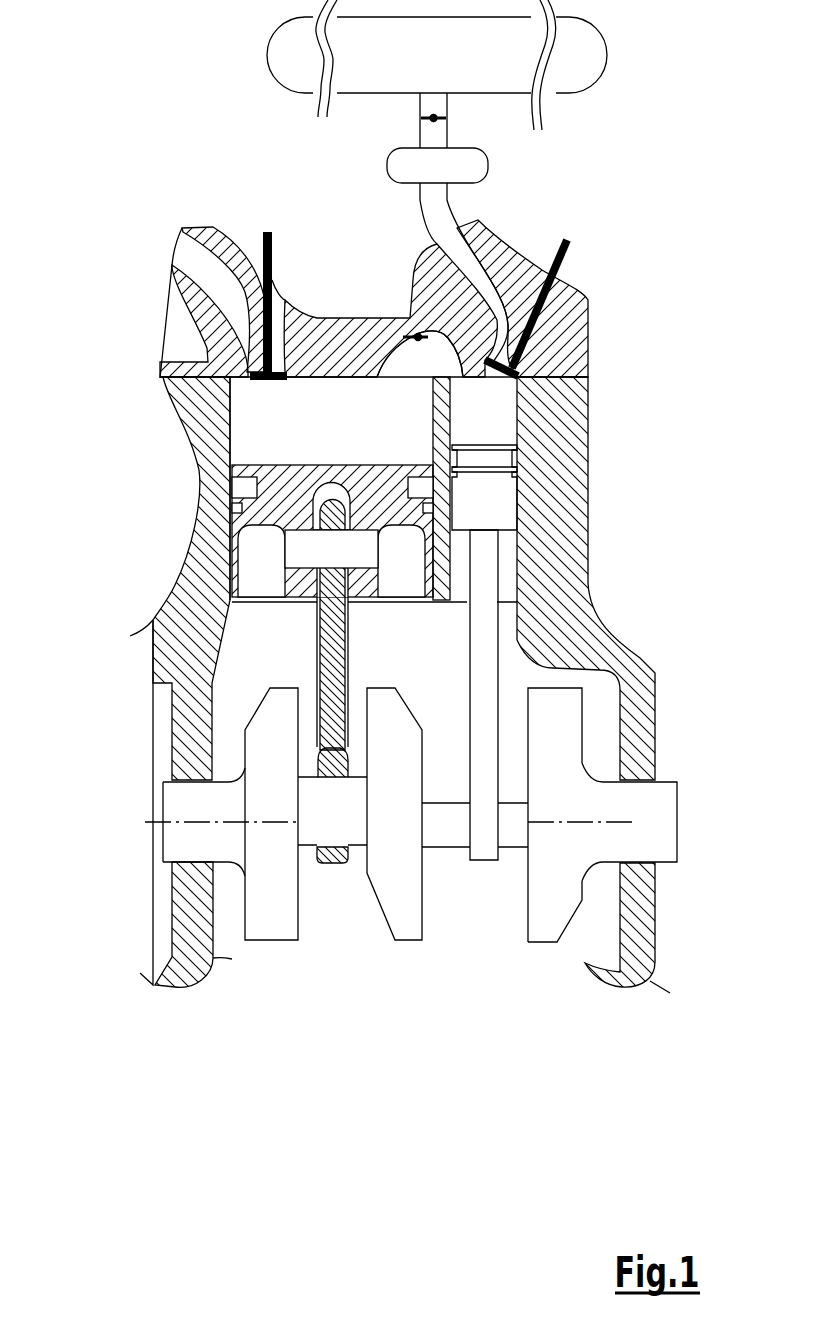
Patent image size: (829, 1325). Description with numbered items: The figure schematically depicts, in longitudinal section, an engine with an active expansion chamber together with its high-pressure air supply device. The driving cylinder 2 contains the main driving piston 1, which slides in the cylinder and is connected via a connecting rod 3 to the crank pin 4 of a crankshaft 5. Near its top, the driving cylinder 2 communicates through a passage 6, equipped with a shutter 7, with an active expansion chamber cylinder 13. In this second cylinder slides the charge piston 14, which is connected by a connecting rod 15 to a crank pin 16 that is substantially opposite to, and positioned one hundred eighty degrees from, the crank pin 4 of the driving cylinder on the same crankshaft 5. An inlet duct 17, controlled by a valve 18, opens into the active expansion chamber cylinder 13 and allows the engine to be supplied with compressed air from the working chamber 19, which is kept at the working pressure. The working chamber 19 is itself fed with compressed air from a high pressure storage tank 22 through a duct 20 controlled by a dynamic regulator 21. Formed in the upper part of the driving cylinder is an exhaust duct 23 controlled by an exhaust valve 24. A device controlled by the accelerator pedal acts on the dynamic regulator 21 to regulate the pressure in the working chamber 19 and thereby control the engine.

The main driving piston 1 is at (250, 428).
The driving cylinder 2 is at (230, 403).
The connecting rod 3 is at (320, 632).
The crank pin 4 is at (312, 790).
The crankshaft 5 is at (587, 803).
The passage 6 is at (387, 347).
The shutter 7 is at (410, 338).
The active expansion chamber cylinder 13 is at (518, 420).
The charge piston 14 is at (498, 553).
The connecting rod 15 is at (485, 655).
The crank pin 16 is at (448, 832).
The inlet duct 17 is at (440, 200).
The valve 18 is at (567, 258).
The working chamber 19 is at (458, 167).
The duct 20 is at (433, 137).
The dynamic regulator 21 is at (445, 113).
The high pressure storage tank 22 is at (293, 31).
The exhaust duct 23 is at (203, 255).
The exhaust valve 24 is at (267, 232).